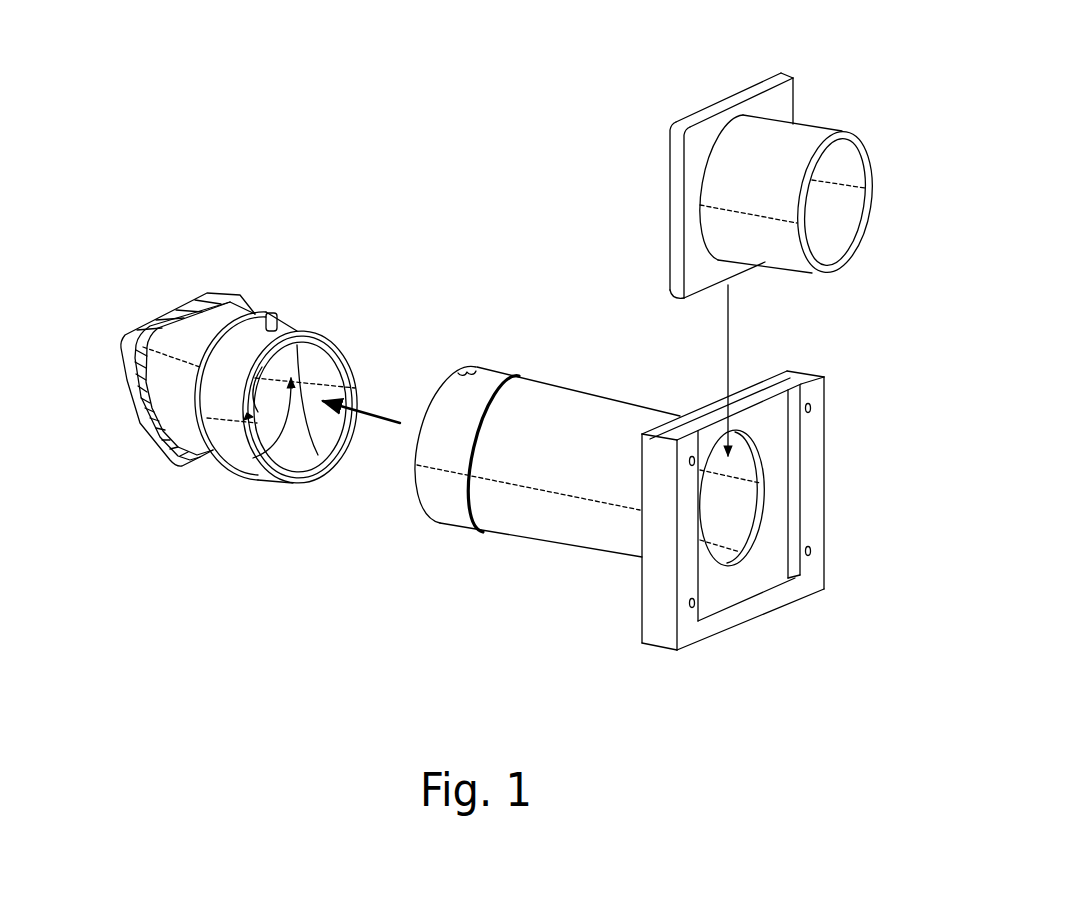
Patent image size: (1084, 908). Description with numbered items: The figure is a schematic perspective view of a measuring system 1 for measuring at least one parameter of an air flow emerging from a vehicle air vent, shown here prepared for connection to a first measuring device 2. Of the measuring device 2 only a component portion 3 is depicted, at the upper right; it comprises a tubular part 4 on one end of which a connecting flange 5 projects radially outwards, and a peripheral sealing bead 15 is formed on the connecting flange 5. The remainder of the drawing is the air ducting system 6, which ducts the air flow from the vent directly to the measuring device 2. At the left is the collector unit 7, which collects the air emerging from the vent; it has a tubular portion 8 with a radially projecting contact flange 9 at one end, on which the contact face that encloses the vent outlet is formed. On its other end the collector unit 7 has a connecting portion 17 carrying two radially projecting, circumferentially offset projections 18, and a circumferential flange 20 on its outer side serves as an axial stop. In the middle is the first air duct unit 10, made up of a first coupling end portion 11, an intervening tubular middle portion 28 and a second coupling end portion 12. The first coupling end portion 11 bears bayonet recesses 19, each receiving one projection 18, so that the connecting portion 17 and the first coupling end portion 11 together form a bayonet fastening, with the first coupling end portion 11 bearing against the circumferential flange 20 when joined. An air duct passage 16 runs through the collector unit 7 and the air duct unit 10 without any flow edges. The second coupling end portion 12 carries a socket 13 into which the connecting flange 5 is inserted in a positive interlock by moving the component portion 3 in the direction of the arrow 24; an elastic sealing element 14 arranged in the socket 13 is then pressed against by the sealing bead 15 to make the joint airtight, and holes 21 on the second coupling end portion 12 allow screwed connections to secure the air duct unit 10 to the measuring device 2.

The measuring system 1 is at (431, 200).
The first measuring device 2 is at (841, 126).
The component portion 3 is at (801, 121).
The tubular part 4 is at (762, 142).
The connecting flange 5 is at (698, 130).
The air ducting system 6 is at (117, 688).
The collector unit 7 is at (262, 304).
The tubular portion 8 is at (192, 339).
The contact flange 9 is at (148, 322).
The first air duct unit 10 is at (579, 386).
The first coupling end portion 11 is at (503, 538).
The second coupling end portion 12 is at (825, 460).
The socket 13 is at (776, 428).
The elastic sealing element 14 is at (756, 566).
The peripheral sealing bead 15 is at (668, 183).
The air duct passage 16 is at (312, 470).
The connecting portion 17 is at (232, 445).
The projections 18 is at (283, 318).
The bayonet recess 19 is at (466, 365).
The circumferential flange 20 is at (193, 398).
The holes 21 is at (748, 514).
The arrow 24 is at (729, 352).
The tubular middle portion 28 is at (610, 445).